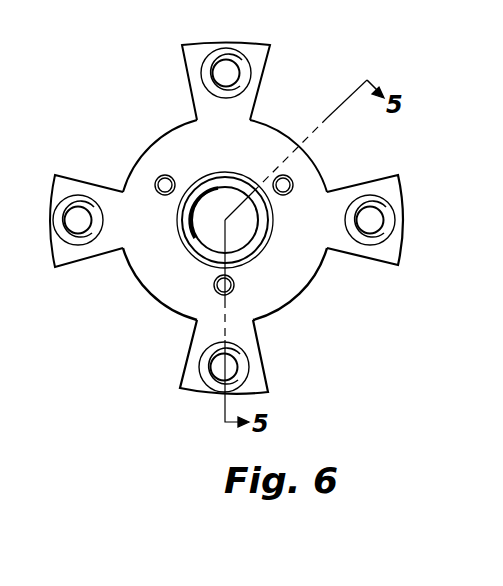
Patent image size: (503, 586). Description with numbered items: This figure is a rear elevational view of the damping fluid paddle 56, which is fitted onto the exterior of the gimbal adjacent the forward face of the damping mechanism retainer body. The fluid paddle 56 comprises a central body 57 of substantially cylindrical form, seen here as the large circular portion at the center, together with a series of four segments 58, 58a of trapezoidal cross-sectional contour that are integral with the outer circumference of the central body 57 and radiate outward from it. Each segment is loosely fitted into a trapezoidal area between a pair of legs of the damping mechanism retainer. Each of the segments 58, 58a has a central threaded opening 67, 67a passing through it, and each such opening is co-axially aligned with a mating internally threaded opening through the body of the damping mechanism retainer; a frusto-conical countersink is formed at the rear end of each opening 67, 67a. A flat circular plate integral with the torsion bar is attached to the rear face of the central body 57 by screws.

The fluid paddle 56 is at (253, 239).
The central body 57 is at (165, 306).
The segment 58 is at (200, 393).
The segment 58a is at (401, 255).
The central threaded opening 67 is at (232, 368).
The central threaded opening 67a is at (376, 226).